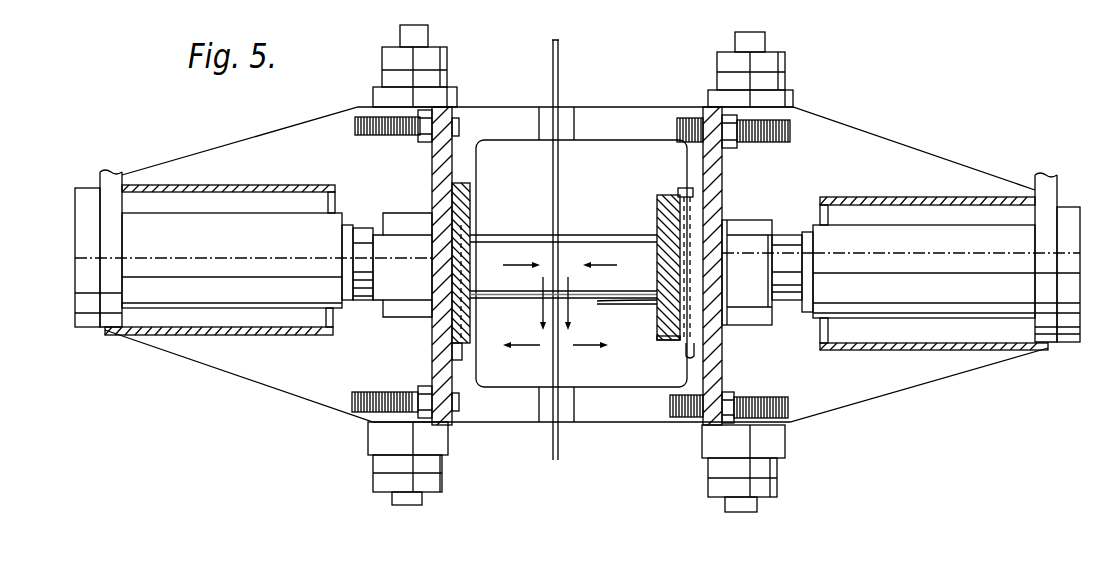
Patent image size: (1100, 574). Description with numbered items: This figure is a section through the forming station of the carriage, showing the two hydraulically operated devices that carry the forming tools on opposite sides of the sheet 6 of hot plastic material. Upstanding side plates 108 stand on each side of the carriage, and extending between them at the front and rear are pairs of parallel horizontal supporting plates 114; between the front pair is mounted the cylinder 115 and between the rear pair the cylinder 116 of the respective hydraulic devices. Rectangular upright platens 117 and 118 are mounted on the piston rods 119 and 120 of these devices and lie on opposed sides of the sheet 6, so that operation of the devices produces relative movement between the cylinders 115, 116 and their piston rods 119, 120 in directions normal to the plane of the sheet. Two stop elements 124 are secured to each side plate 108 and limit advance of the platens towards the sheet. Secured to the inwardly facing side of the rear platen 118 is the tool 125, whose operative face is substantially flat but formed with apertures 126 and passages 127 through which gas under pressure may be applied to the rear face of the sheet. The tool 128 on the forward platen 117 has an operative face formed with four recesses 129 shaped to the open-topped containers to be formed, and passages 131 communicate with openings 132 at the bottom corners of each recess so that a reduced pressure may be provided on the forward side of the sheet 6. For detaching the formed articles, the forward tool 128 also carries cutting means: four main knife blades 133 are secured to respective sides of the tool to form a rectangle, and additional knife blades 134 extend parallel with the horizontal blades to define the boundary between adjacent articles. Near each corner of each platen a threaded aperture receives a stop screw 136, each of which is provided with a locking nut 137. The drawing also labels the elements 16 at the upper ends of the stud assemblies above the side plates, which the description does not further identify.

The sheet 6 is at (553, 63).
The stud 16 is at (400, 35).
The side plate 108 is at (282, 380).
The horizontal supporting plates 114 is at (281, 186).
The cylinder 115 is at (943, 259).
The cylinder 116 is at (224, 247).
The platen 117 is at (718, 193).
The platen 118 is at (437, 165).
The piston rod 119 is at (787, 262).
The piston rod 120 is at (360, 247).
The stop element 124 is at (566, 118).
The tool 125 is at (472, 195).
The apertures 126 is at (472, 229).
The passages 127 is at (470, 292).
The tool 128 is at (675, 190).
The recesses 129 is at (660, 207).
The passages 131 is at (662, 340).
The openings 132 is at (658, 312).
The main knife blades 133 is at (667, 350).
The additional knife blades 134 is at (658, 268).
The stop screws 136 is at (782, 143).
The locking nut 137 is at (733, 148).